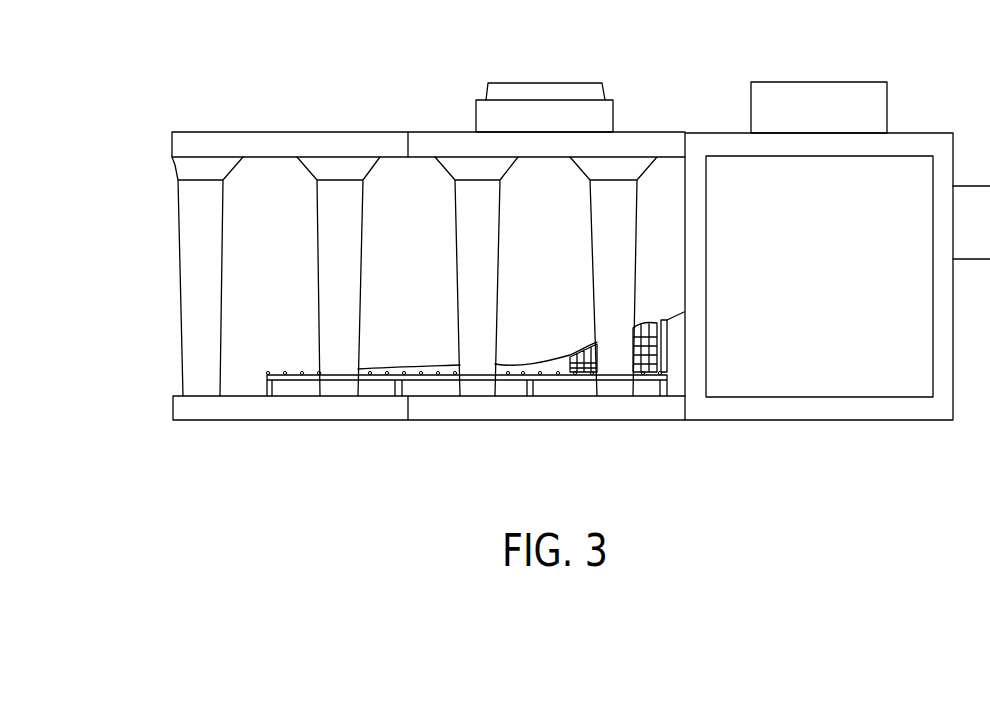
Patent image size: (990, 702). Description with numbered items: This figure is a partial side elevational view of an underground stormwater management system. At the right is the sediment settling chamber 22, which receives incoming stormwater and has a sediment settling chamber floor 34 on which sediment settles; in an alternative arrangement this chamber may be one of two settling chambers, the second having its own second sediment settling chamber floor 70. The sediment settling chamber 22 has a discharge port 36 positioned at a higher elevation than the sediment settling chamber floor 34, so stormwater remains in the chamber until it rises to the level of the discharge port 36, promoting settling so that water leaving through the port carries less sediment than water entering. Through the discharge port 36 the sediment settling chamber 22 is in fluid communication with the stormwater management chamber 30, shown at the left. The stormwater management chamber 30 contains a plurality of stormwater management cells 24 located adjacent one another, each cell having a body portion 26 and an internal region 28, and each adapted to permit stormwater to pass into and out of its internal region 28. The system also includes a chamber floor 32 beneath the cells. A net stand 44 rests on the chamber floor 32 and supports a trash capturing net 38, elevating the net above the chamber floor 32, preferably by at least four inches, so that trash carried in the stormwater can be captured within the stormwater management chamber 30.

The sediment settling chamber 22 is at (935, 143).
The stormwater management cells 24 is at (306, 122).
The body portion 26 is at (353, 145).
The internal region 28 is at (246, 198).
The stormwater management chamber 30 is at (108, 135).
The chamber floor 32 is at (242, 392).
The sediment settling chamber floor 34 is at (780, 398).
The discharge port 36 is at (681, 358).
The trash capturing net 38 is at (572, 376).
The net stand 44 is at (391, 378).
The second sediment settling chamber floor 70 is at (840, 399).